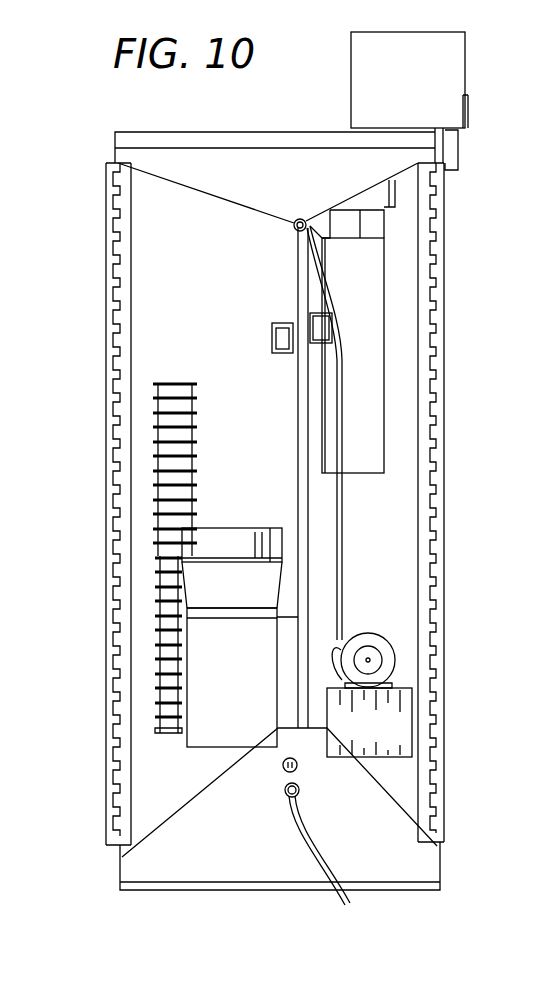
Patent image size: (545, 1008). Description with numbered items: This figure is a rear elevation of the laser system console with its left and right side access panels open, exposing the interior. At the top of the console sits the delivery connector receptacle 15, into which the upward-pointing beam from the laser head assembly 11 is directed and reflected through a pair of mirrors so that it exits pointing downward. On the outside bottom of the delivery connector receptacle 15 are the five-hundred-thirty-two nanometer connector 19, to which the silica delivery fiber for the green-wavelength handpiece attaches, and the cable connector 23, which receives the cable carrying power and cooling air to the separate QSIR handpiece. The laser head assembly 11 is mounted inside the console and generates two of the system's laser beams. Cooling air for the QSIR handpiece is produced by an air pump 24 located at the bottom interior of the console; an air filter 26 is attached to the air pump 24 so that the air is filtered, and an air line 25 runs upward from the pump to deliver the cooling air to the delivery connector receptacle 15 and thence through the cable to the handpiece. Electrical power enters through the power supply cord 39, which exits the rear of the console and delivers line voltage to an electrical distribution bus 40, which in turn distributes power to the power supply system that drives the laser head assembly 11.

The delivery connector receptacle 15 is at (458, 72).
The 532 nm connector 19 is at (445, 130).
The cable connector 23 is at (456, 158).
The laser head assembly 11 is at (381, 318).
The air line 25 is at (340, 568).
The air filter 26 is at (378, 652).
The air pump 24 is at (412, 720).
The electrical distribution bus 40 is at (158, 503).
The power supply cord 39 is at (312, 862).